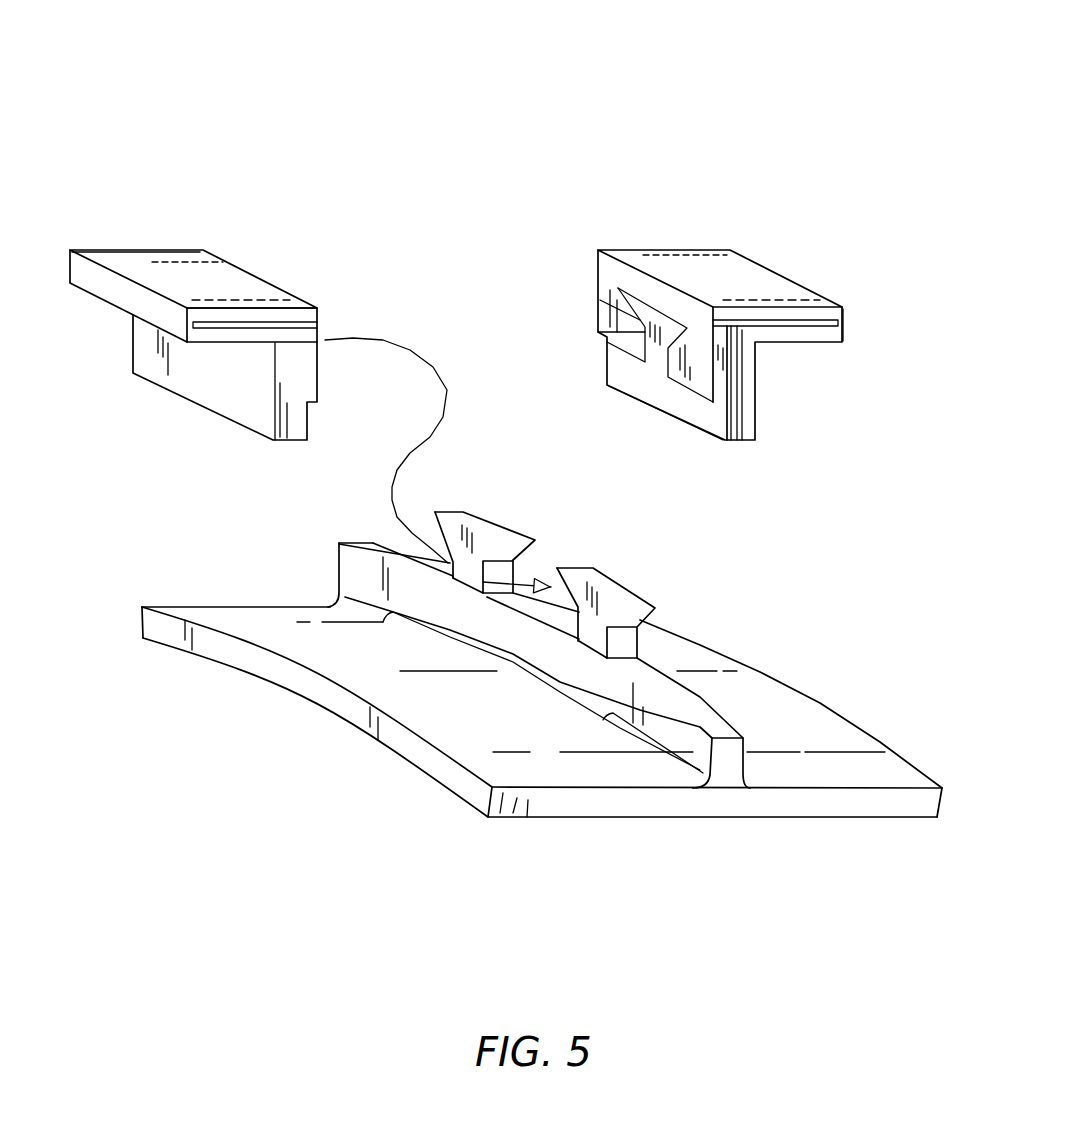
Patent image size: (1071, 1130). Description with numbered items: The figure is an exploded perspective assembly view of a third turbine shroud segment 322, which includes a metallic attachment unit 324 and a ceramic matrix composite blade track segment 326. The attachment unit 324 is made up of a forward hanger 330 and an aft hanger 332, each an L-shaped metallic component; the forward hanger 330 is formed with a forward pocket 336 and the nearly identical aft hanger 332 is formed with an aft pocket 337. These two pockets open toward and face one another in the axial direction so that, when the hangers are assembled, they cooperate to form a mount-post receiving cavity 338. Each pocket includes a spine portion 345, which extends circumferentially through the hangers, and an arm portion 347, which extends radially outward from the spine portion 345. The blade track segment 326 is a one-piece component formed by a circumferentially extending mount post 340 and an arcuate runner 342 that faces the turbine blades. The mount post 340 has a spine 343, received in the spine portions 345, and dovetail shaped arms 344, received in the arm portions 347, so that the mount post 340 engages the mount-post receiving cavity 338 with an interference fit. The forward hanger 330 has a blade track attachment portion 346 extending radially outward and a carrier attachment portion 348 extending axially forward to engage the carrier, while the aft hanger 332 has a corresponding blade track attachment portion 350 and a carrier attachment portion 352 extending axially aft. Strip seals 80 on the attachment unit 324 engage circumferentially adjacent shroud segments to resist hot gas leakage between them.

The turbine shroud segment 322 is at (127, 103).
The attachment unit 324 is at (550, 178).
The ceramic matrix composite blade track segment 326 is at (232, 758).
The forward hanger 330 is at (147, 239).
The aft hanger 332 is at (664, 214).
The forward pocket 336 is at (319, 378).
The aft pocket 337 is at (658, 352).
The mount-post receiving cavity 338 is at (498, 233).
The mount post 340 is at (331, 547).
The runner 342 is at (361, 723).
The spine 343 is at (515, 631).
The dovetail shaped arms 344 is at (502, 516).
The spine portion 345 is at (648, 383).
The blade track attachment portion 346 is at (224, 385).
The arm portion 347 is at (678, 583).
The carrier attachment portion 348 is at (111, 279).
The blade track attachment portion 350 is at (757, 403).
The carrier attachment portion 352 is at (849, 323).
The strip seals 80 is at (798, 320).